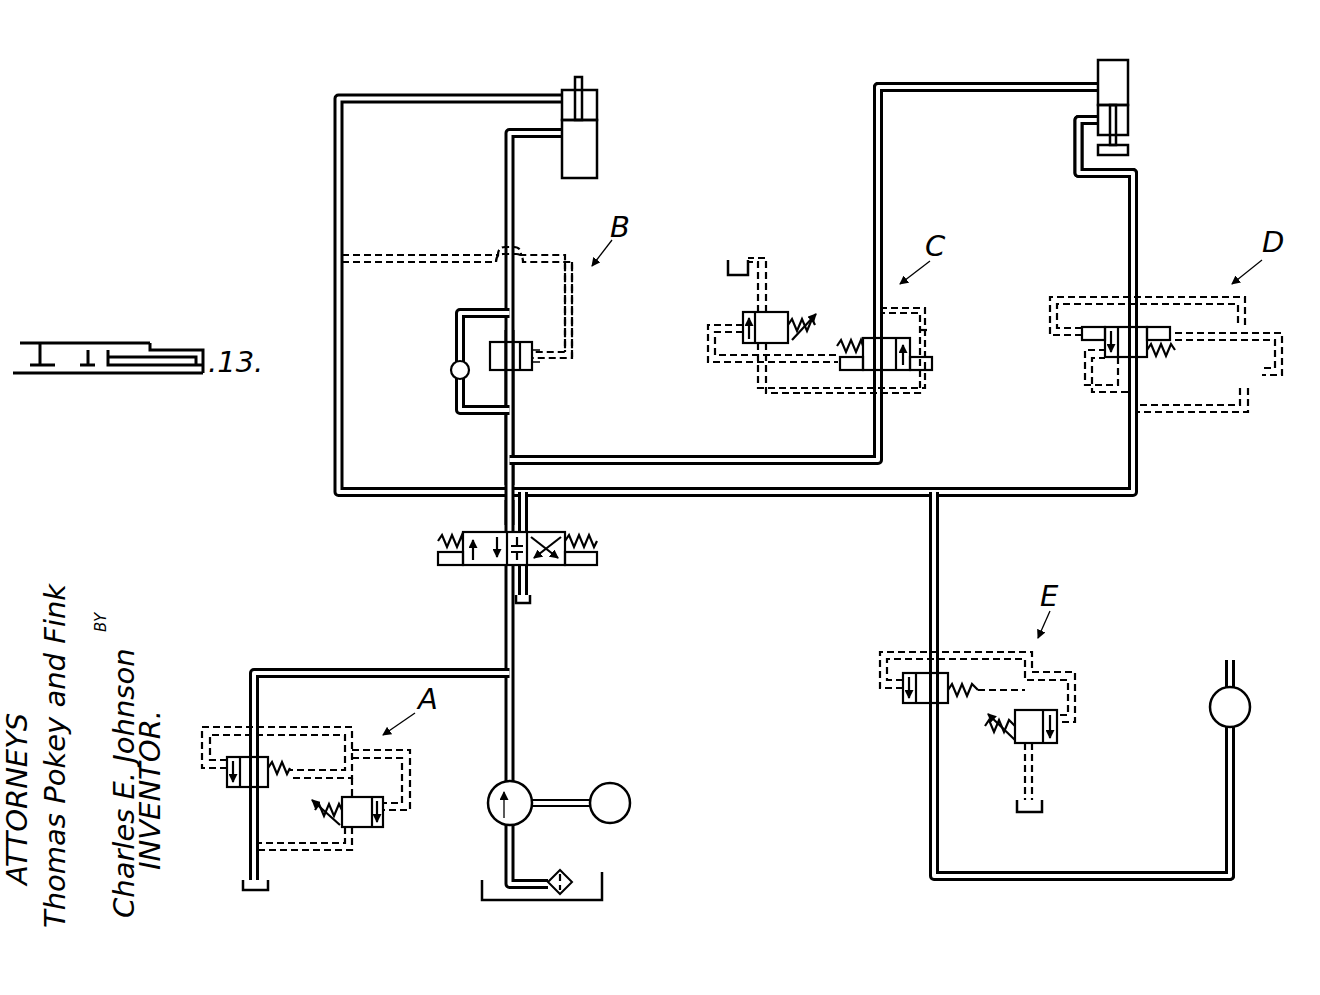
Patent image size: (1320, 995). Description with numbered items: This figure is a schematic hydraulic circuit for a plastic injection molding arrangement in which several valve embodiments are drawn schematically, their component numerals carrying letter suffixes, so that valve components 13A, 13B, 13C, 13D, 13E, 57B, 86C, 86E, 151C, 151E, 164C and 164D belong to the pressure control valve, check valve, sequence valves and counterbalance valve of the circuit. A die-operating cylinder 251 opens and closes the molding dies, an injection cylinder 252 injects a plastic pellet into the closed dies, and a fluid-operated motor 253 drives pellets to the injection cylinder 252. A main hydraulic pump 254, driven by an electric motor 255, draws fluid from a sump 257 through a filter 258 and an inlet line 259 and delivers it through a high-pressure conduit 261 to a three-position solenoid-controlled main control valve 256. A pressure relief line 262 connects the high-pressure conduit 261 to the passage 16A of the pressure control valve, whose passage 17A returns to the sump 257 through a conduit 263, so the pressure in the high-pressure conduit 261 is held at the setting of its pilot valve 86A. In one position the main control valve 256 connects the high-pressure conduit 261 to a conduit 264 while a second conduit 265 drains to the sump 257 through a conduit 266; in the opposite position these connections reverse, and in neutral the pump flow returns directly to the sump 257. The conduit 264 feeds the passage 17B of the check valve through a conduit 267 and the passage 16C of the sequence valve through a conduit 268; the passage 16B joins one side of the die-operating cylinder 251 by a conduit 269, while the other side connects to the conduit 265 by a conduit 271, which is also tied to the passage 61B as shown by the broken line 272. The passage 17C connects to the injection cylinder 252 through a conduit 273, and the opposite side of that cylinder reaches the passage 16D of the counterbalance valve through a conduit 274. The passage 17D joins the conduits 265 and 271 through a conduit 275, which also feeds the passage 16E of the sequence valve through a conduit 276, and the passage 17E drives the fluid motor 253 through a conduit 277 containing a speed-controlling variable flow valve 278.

The die-operating cylinder 251 is at (600, 108).
The injection cylinder 252 is at (1132, 96).
The fluid-operated motor 253 is at (1252, 698).
The main hydraulic pump 254 is at (528, 782).
The electric motor 255 is at (635, 789).
The main control valve 256 is at (470, 570).
The sump 257 is at (605, 874).
The filter 258 is at (563, 868).
The inlet line 259 is at (506, 862).
The high-pressure conduit 261 is at (505, 638).
The pressure relief line 262 is at (349, 670).
The conduit 263 is at (250, 874).
The conduit 264 is at (505, 511).
The second conduit 265 is at (530, 513).
The conduit 266 is at (530, 586).
The conduit 267 is at (505, 434).
The conduit 268 is at (666, 455).
The conduit 269 is at (513, 214).
The conduit 271 is at (335, 190).
The broken line 272 is at (419, 256).
The conduit 273 is at (873, 108).
The conduit 274 is at (1088, 175).
The conduit 275 is at (700, 498).
The conduit 276 is at (930, 545).
The conduit 277 is at (930, 826).
The variable flow valve 278 is at (1068, 860).
The flow control valve 13A is at (231, 791).
The check valve 13B is at (448, 368).
The flow control valve 13C is at (913, 351).
The flow control valve 13D is at (1116, 327).
The flow control valve 13E is at (900, 702).
The passage 16A is at (258, 728).
The passage 16B is at (560, 263).
The passage 16C is at (883, 396).
The passage 16D is at (1137, 300).
The passage 16E is at (934, 650).
The passage 17A is at (250, 858).
The passage 17B is at (513, 412).
The passage 17C is at (887, 310).
The passage 17D is at (1127, 416).
The passage 17E is at (930, 758).
The valve port 57B is at (536, 372).
The passage 61B is at (537, 350).
The pilot valve 86A is at (394, 830).
The relief valve 86C is at (782, 305).
The relief valve 86E is at (1062, 718).
The drain line 151C is at (772, 262).
The drain line 151E is at (1040, 762).
The passage 164C is at (932, 332).
The passage 164D is at (1085, 384).